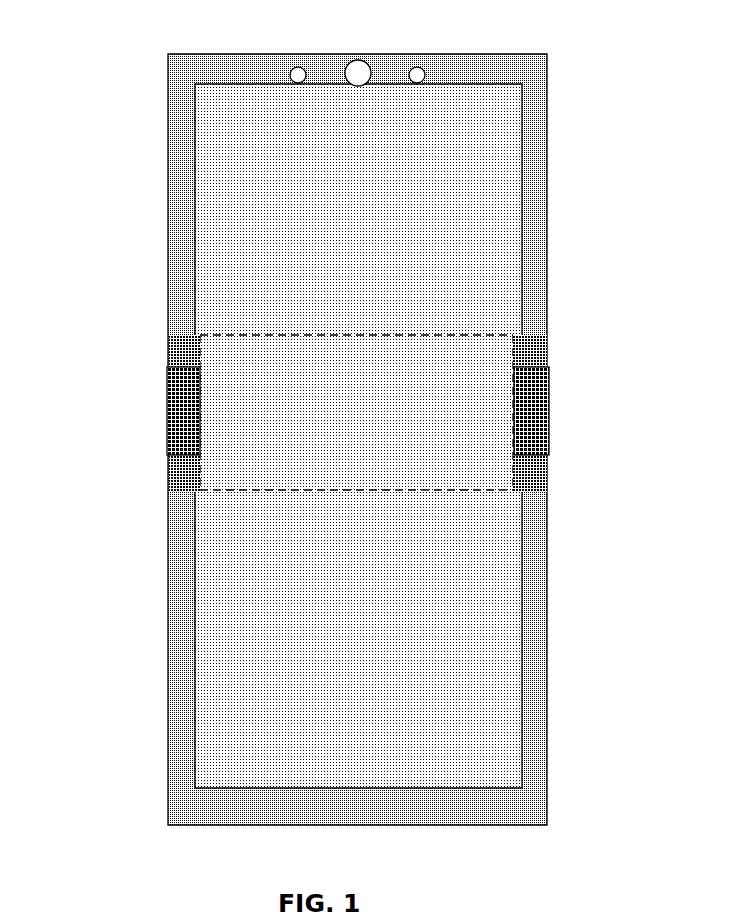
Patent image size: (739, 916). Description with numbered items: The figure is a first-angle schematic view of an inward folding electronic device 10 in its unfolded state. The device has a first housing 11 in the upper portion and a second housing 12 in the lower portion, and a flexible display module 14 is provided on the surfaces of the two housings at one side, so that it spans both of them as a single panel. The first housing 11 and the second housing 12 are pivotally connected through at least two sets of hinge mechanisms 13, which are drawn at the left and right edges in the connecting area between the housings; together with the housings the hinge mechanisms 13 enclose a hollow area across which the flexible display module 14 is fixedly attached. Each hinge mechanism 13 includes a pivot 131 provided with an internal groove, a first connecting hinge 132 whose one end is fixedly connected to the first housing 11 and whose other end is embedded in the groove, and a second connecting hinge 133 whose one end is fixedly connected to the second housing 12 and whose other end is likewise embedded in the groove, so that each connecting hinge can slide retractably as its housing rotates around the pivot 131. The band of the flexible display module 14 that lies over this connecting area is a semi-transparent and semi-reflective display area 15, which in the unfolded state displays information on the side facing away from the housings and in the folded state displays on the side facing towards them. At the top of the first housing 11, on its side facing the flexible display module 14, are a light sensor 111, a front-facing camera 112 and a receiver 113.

The inward folding electronic device 10 is at (155, 133).
The first housing 11 is at (183, 238).
The second housing 12 is at (187, 623).
The hinge mechanism 13 is at (322, 421).
The pivot 131 is at (167, 420).
The first connecting hinge 132 is at (175, 365).
The second connecting hinge 133 is at (175, 482).
The flexible display module 14 is at (378, 773).
The semi-transparent and semi-reflective display area 15 is at (402, 455).
The light sensor 111 is at (290, 72).
The front-facing camera 112 is at (358, 73).
The receiver 113 is at (422, 75).